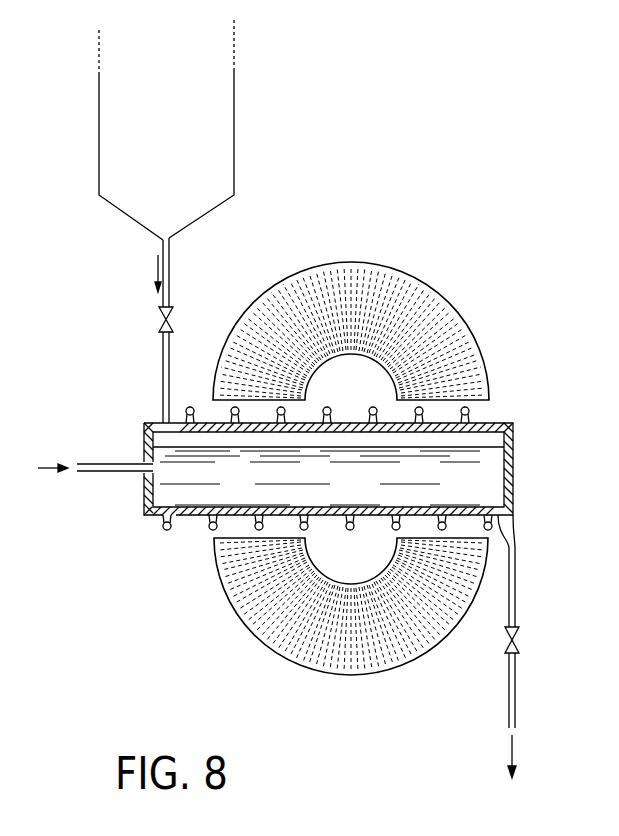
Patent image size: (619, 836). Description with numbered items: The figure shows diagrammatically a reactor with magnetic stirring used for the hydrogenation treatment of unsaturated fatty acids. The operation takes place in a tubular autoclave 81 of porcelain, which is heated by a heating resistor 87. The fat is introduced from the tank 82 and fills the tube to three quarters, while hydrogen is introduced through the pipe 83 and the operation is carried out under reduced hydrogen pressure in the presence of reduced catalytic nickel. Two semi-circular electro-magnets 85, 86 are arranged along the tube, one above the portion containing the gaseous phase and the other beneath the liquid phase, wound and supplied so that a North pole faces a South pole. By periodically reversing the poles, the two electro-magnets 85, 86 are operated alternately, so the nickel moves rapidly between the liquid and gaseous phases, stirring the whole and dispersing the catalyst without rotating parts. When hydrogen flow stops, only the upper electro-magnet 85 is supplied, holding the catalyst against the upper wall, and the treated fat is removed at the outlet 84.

The tubular autoclave 81 is at (144, 492).
The tank 82 is at (234, 120).
The pipe 83 is at (97, 463).
The outlet 84 is at (510, 697).
The electro-magnet 85 is at (425, 300).
The electro-magnet 86 is at (288, 625).
The heating resistor 87 is at (168, 532).